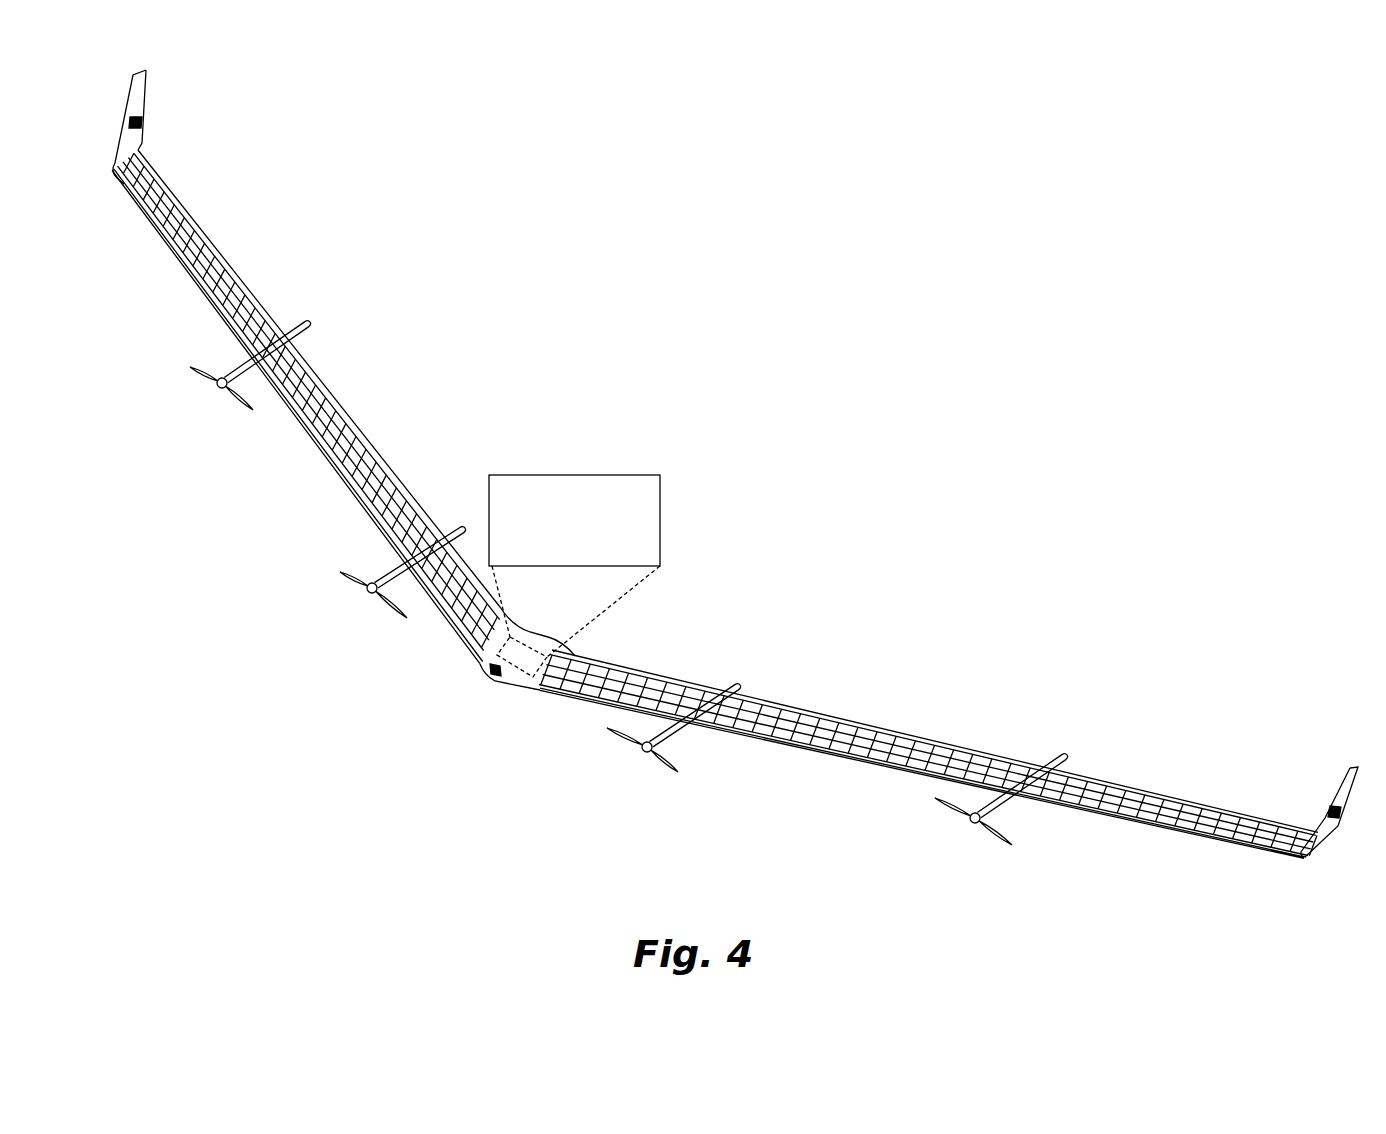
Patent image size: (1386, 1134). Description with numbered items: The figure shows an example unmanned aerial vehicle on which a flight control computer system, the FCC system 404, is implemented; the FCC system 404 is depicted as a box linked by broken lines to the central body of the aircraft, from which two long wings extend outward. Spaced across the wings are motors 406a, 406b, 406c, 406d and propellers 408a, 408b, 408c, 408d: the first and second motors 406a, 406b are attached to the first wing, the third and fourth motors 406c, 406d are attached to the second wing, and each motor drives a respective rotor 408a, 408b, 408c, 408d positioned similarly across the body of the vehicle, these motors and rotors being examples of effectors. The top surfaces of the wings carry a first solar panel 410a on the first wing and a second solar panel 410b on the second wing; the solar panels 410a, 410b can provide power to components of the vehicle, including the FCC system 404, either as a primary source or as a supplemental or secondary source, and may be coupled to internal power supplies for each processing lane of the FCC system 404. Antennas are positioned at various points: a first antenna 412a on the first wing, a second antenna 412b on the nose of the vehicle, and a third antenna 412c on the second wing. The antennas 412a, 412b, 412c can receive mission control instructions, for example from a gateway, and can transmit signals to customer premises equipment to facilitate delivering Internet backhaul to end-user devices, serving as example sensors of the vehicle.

The FCC system 404 is at (574, 576).
The first motor 406a is at (312, 322).
The second motor 406b is at (466, 527).
The third motor 406c is at (742, 685).
The fourth motor 406d is at (1069, 754).
The propeller 408a is at (253, 410).
The propeller 408b is at (407, 618).
The propeller 408c is at (678, 772).
The propeller 408d is at (1012, 845).
The first solar panel 410a is at (349, 428).
The second solar panel 410b is at (835, 722).
The first antenna 412a is at (143, 122).
The second antenna 412b is at (497, 676).
The third antenna 412c is at (1332, 810).